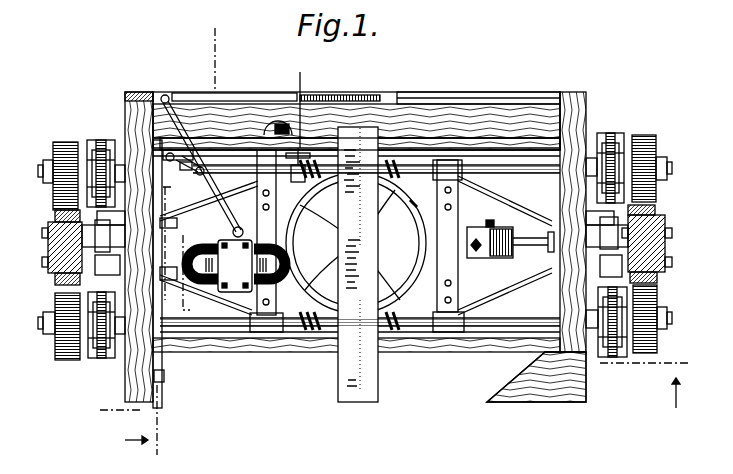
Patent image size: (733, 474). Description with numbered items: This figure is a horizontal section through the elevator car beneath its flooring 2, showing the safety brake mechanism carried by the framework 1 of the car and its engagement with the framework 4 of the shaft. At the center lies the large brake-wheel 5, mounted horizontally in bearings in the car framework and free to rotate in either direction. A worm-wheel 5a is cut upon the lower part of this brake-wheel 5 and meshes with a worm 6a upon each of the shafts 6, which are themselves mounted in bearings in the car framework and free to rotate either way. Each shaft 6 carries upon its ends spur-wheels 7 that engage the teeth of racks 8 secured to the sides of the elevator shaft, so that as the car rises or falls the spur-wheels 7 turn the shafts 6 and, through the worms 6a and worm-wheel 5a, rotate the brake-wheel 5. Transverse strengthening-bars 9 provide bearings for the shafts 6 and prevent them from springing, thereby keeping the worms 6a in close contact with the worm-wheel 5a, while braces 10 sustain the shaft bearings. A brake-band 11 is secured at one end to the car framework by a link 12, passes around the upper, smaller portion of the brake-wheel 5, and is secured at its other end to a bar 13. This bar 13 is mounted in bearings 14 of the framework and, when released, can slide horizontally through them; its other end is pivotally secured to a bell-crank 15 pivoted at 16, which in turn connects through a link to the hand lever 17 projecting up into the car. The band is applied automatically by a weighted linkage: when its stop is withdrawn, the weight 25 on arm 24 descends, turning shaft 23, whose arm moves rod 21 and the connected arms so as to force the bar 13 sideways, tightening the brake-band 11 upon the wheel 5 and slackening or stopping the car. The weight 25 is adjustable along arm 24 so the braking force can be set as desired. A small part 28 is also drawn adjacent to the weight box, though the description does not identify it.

The framework of the car 1 is at (394, 401).
The flooring 2 is at (186, 242).
The framework of the shaft 4 is at (48, 250).
The brake-wheel 5 is at (408, 200).
The worm-wheel 5a is at (417, 207).
The shaft 6 is at (515, 175).
The worm 6a is at (398, 164).
The spur-wheel 7 is at (53, 143).
The rack 8 is at (55, 212).
The transverse strengthening-bar 9 is at (257, 215).
The brace 10 is at (212, 200).
The brake-band 11 is at (305, 185).
The link 12 is at (335, 178).
The bar 13 is at (328, 148).
The bearing 14 is at (186, 191).
The bell-crank 15 is at (186, 160).
The pivot 16 is at (168, 153).
The lever 17 is at (157, 245).
The rod 21 is at (492, 143).
The shaft 23 is at (560, 185).
The arm 24 is at (532, 246).
The weight 25 is at (504, 236).
The terminal 28 is at (490, 220).